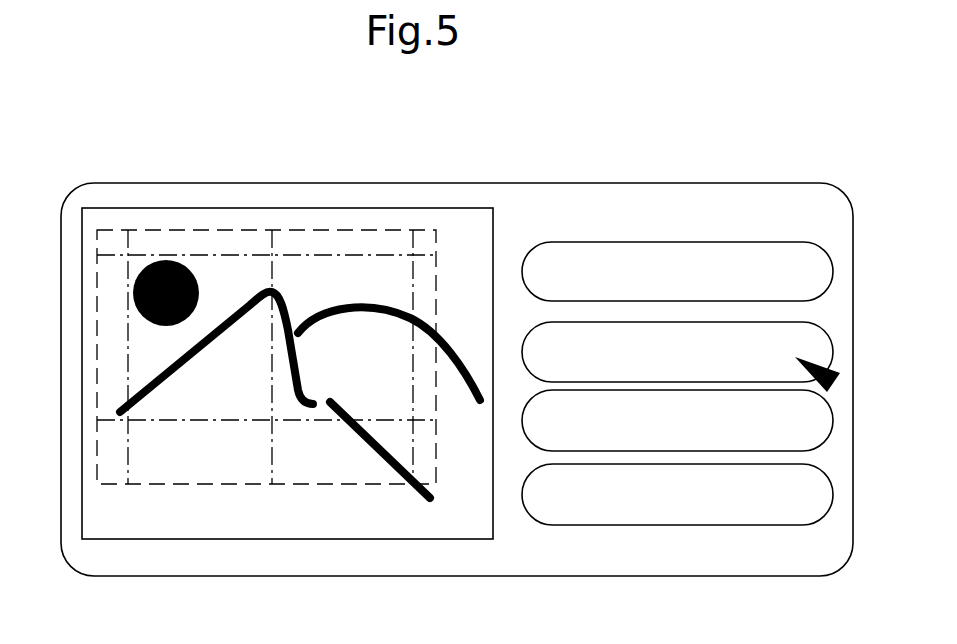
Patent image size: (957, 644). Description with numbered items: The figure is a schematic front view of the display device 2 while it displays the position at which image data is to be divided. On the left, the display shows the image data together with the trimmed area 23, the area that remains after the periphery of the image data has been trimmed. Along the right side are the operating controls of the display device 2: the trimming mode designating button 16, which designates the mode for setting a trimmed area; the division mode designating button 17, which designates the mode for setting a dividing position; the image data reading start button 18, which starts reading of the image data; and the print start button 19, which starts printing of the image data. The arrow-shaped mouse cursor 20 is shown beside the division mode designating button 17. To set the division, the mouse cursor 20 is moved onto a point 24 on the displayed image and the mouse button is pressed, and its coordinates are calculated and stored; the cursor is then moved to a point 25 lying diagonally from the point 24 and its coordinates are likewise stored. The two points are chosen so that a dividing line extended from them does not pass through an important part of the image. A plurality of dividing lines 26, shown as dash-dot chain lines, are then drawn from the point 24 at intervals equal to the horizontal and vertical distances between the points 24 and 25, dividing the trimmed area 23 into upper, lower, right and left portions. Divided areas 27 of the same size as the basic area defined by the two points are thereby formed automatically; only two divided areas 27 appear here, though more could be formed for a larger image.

The display device 2 is at (659, 204).
The trimming mode designating button 16 is at (833, 266).
The division mode designating button 17 is at (818, 335).
The image data reading start button 18 is at (820, 410).
The print start button 19 is at (820, 492).
The mouse cursor 20 is at (835, 368).
The trimmed area 23 is at (173, 484).
The point 24 is at (128, 257).
The point 25 is at (272, 421).
The dividing lines 26 is at (377, 420).
The divided area 27 is at (233, 407).